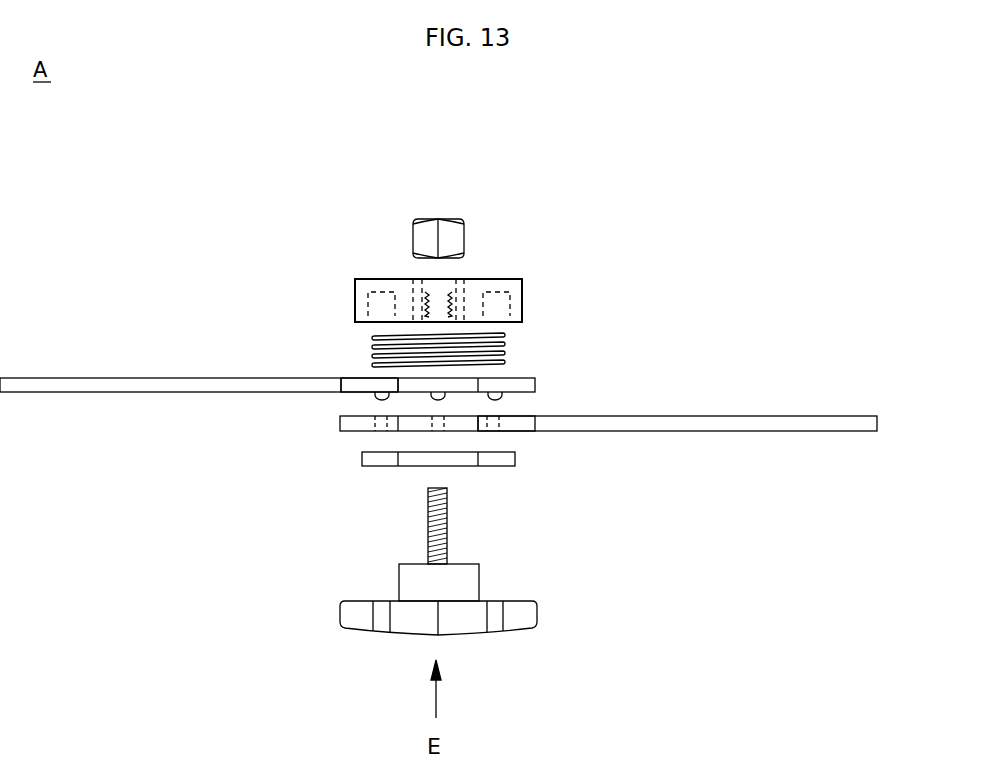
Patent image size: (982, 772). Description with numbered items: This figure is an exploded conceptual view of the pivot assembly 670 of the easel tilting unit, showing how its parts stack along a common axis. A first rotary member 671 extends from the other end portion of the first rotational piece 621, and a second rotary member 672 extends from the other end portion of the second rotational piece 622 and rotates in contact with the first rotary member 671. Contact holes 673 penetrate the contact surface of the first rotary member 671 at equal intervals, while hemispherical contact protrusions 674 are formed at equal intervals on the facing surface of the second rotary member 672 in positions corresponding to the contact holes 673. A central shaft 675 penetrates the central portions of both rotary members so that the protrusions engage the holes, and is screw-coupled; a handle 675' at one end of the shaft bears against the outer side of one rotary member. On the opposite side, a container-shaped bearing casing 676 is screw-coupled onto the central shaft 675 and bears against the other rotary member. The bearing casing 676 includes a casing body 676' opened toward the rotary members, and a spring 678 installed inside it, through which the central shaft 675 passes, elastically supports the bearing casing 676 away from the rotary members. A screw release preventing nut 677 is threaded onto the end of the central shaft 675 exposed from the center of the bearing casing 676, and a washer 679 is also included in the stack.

The pivot assembly 670 is at (522, 246).
The first rotary member 671 is at (520, 432).
The second rotary member 672 is at (360, 380).
The contact holes 673 is at (378, 432).
The contact protrusions 674 is at (497, 403).
The central shaft 675 is at (364, 544).
The handle 675' is at (353, 626).
The bearing casing 676 is at (536, 304).
The casing body 676' is at (508, 298).
The screw release preventing nut 677 is at (418, 236).
The spring 678 is at (372, 346).
The washer 679 is at (498, 466).
The first rotational piece 621 is at (805, 432).
The second rotational piece 622 is at (96, 378).